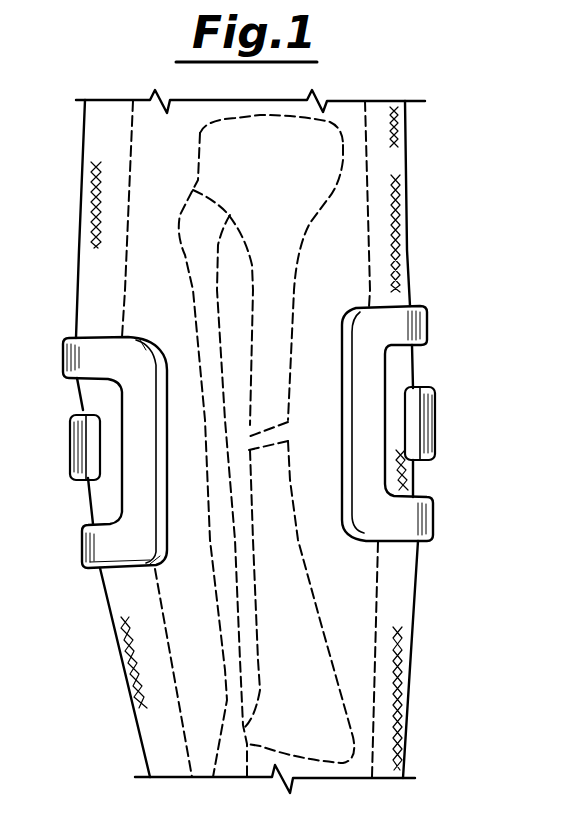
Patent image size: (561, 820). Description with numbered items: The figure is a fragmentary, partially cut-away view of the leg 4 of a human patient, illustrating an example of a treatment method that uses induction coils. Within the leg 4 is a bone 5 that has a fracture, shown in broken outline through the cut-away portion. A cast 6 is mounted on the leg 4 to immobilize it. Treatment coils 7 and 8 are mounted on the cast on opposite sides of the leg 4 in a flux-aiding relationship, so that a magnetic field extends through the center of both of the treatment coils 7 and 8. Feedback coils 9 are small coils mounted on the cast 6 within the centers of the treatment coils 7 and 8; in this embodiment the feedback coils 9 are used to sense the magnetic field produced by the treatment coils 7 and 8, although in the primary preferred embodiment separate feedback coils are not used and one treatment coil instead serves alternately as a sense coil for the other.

The leg 4 is at (343, 117).
The bone 5 is at (267, 448).
The cast 6 is at (395, 200).
The treatment coil 7 is at (63, 372).
The treatment coil 8 is at (422, 328).
The feedback coil 9 is at (73, 456).